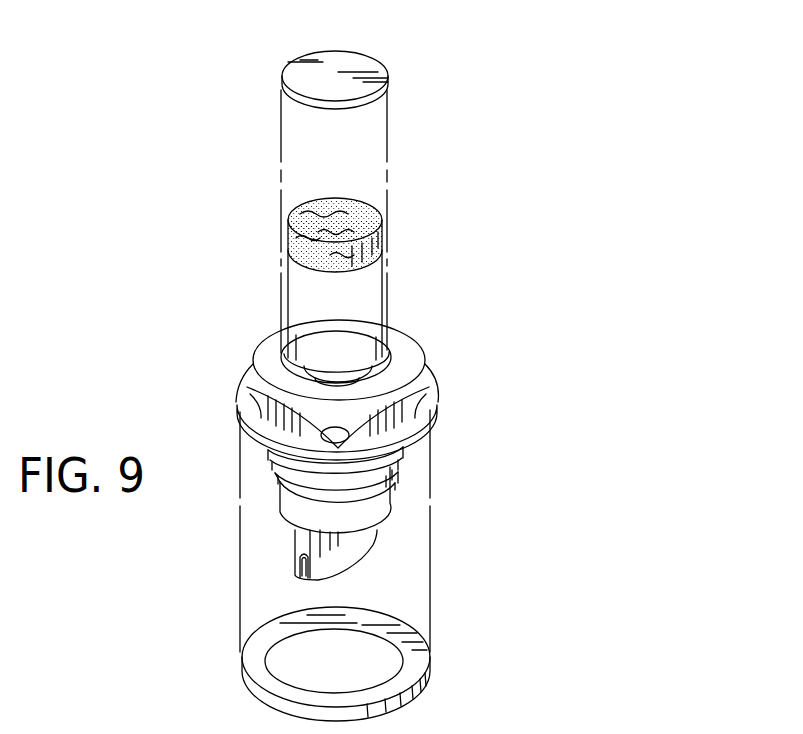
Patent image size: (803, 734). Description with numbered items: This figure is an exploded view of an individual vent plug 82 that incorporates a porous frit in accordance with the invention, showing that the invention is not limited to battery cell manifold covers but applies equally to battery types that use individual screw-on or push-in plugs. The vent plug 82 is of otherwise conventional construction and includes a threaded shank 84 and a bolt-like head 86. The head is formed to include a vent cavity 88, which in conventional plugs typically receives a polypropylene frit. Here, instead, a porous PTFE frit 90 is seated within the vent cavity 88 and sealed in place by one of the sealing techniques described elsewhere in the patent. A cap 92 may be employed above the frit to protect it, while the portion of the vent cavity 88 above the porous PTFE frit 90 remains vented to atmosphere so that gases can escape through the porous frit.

The vent plug 82 is at (494, 424).
The threaded shank 84 is at (398, 489).
The bolt-like head 86 is at (247, 381).
The vent cavity 88 is at (348, 358).
The porous PTFE frit 90 is at (362, 212).
The cap 92 is at (357, 65).